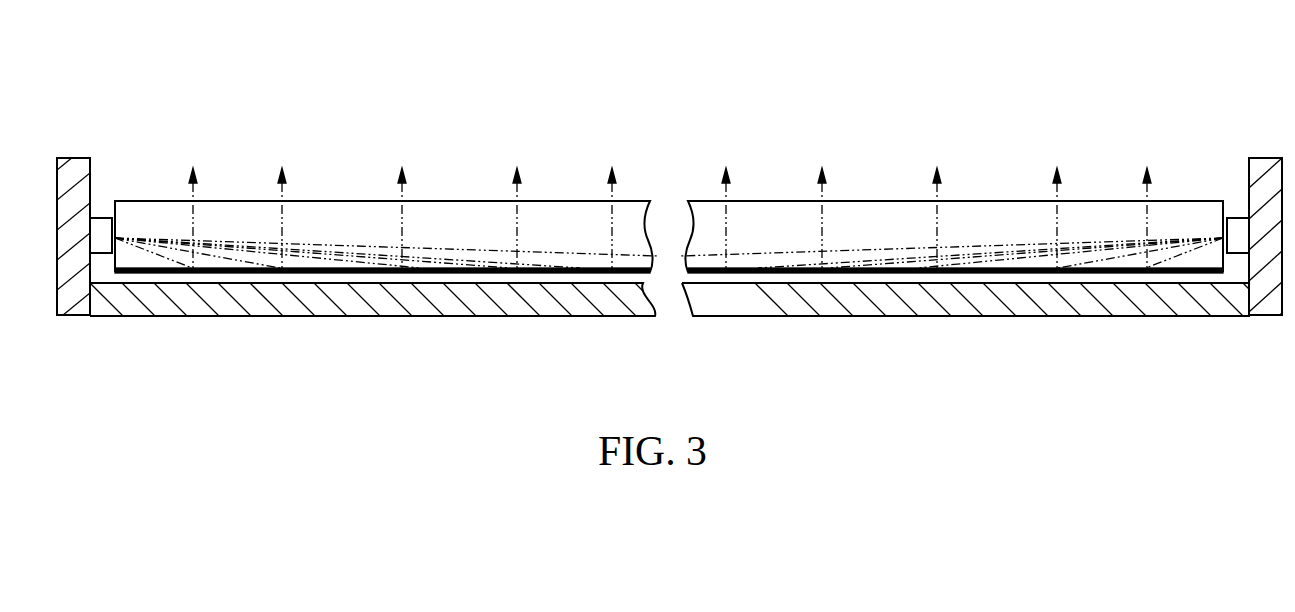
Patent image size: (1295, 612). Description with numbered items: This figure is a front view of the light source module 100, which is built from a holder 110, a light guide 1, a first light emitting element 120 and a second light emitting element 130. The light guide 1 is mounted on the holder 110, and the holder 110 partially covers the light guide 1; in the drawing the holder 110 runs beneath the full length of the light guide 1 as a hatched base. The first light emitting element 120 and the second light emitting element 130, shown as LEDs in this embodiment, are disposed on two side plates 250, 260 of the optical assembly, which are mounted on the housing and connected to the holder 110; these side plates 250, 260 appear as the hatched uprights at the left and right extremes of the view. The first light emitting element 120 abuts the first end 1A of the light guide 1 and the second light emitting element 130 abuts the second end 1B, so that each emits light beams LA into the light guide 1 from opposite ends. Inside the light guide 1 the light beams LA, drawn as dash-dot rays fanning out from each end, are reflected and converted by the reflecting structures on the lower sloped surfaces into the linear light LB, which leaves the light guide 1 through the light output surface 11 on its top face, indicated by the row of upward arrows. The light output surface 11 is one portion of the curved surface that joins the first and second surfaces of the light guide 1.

The light source module 100 is at (683, 87).
The light guide 1 is at (669, 183).
The first end 1A is at (136, 224).
The second end 1B is at (1215, 225).
The light output surface 11 is at (247, 201).
The holder 110 is at (431, 305).
The first light emitting element 120 is at (103, 233).
The second light emitting element 130 is at (1237, 233).
The side plate 250 is at (80, 165).
The side plate 260 is at (1262, 165).
The light beams LA is at (470, 248).
The linear light LB is at (670, 200).